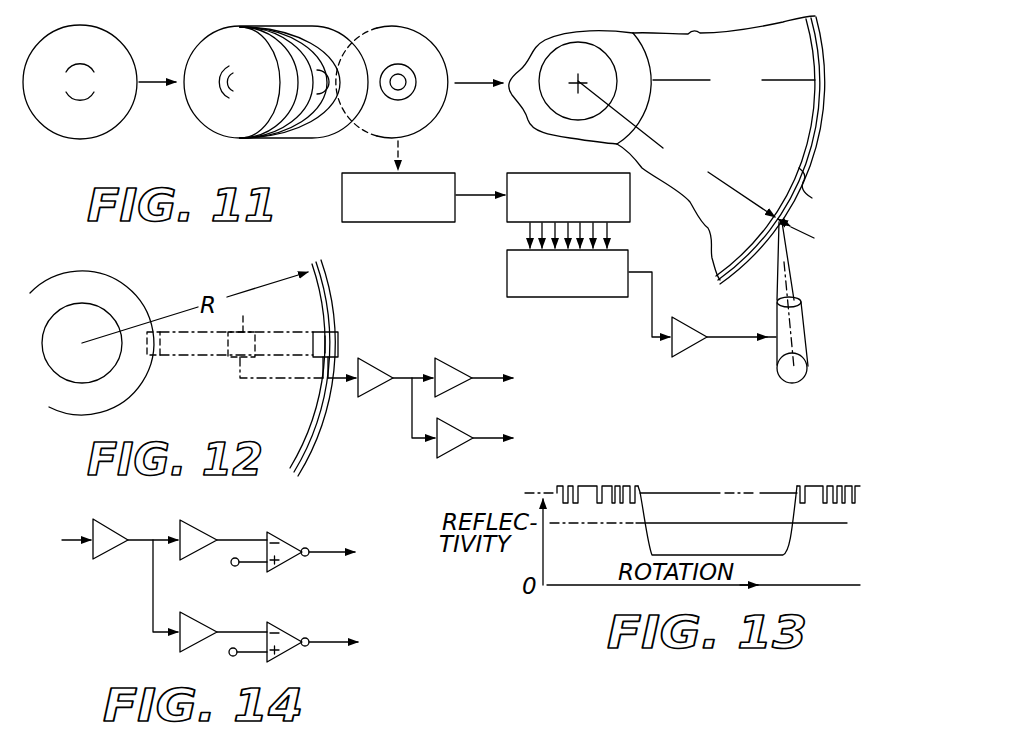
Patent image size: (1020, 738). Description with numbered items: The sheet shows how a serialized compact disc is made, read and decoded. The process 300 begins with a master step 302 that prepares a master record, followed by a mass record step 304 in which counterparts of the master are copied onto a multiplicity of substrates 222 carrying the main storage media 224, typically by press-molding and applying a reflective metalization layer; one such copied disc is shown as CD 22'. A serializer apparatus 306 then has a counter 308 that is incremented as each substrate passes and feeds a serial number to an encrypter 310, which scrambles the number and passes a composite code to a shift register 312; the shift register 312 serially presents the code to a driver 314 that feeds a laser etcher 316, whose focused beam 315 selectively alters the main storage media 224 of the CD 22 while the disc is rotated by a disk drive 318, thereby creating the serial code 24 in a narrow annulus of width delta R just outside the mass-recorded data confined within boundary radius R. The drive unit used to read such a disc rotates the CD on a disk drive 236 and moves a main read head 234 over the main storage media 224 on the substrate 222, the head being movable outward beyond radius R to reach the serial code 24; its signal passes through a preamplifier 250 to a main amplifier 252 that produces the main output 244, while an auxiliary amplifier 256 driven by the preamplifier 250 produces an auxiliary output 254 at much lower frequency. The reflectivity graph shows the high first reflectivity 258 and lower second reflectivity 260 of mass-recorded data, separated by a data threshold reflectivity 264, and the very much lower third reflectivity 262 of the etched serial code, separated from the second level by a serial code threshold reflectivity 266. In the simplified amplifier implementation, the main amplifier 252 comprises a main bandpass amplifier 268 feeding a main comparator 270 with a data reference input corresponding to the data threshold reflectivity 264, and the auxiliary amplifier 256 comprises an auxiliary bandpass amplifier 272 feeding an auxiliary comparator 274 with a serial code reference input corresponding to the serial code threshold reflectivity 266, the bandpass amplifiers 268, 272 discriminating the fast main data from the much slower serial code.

In FIG. 11, the master step 302 is at (62, 140).
In FIG. 11, the process 300 is at (190, 148).
In FIG. 11, the mass record step 304 is at (198, 30).
In FIG. 11, the selected copied disc with serial number Sn 22' is at (419, 94).
In FIG. 11, the serializer apparatus 306 is at (346, 222).
In FIG. 11, the counter 308 is at (443, 172).
In FIG. 11, the encrypter 310 is at (556, 172).
In FIG. 11, the shift register 312 is at (501, 258).
In FIG. 11, the driver 314 is at (676, 317).
In FIG. 11, the laser etcher 316 is at (806, 291).
In FIG. 11, the head output end 315 is at (783, 380).
In FIG. 11, the disk drive 318 is at (558, 71).
In FIG. 11, the CD 22 is at (662, 167).
In FIG. 12, the CD 22 is at (333, 453).
In FIG. 11, the serial code 24 is at (807, 148).
In FIG. 12, the serial code 24 is at (311, 430).
In FIG. 11, the main storage media 224 is at (713, 160).
In FIG. 12, the main storage media 224 is at (243, 414).
In FIG. 12, the disk drive 236 is at (108, 372).
In FIG. 12, the substrate 222 is at (114, 414).
In FIG. 12, the main read head 234 is at (312, 333).
In FIG. 12, the preamplifier 250 is at (368, 365).
In FIG. 14, the preamplifier 250 is at (116, 550).
In FIG. 12, the main amplifier 252 is at (453, 367).
In FIG. 14, the main amplifier 252 is at (313, 572).
In FIG. 12, the auxiliary amplifier 256 is at (446, 428).
In FIG. 14, the auxiliary amplifier 256 is at (174, 614).
In FIG. 12, the main output 244 is at (493, 382).
In FIG. 12, the auxiliary output 254 is at (493, 442).
In FIG. 14, the auxiliary output 254 is at (330, 554).
In FIG. 13, the first reflectivity 258 is at (608, 485).
In FIG. 13, the data threshold reflectivity 264 is at (704, 493).
In FIG. 13, the second reflectivity 260 is at (630, 502).
In FIG. 13, the third reflectivity 262 is at (688, 543).
In FIG. 13, the serial code threshold reflectivity 266 is at (567, 525).
In FIG. 14, the main bandpass amplifier 268 is at (195, 529).
In FIG. 14, the main comparator 270 is at (280, 542).
In FIG. 14, the auxiliary bandpass amplifier 272 is at (205, 624).
In FIG. 14, the auxiliary comparator 274 is at (290, 652).